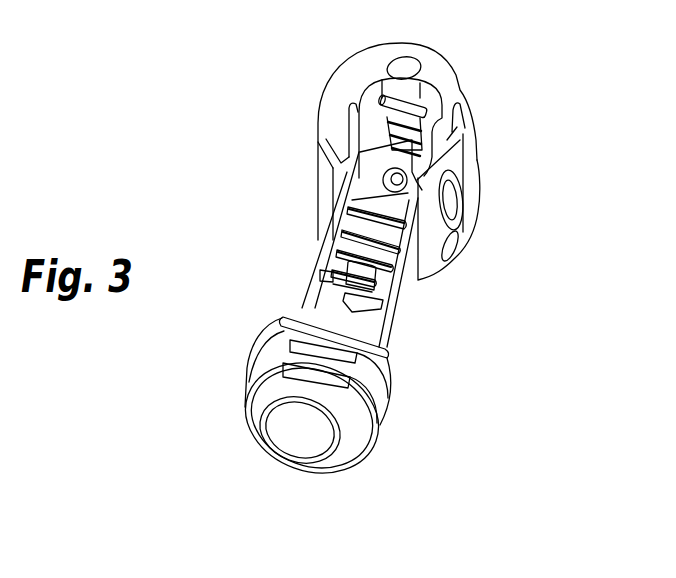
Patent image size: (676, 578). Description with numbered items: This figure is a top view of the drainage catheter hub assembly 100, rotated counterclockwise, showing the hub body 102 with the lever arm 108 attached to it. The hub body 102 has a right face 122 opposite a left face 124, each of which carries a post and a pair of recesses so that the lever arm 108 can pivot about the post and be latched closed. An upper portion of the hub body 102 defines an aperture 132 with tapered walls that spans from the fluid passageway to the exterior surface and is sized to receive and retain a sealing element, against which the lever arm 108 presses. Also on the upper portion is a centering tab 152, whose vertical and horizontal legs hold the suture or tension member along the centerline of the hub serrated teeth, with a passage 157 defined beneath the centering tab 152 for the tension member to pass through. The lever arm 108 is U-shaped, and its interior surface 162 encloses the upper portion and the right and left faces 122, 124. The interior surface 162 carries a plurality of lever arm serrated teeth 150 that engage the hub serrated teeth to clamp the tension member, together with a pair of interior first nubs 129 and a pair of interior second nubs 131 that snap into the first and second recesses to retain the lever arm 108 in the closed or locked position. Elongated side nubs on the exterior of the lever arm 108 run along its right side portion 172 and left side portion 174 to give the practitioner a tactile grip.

The drainage catheter hub assembly 100 is at (192, 109).
The hub body 102 is at (310, 293).
The lever arm 108 is at (468, 183).
The right face 122 is at (392, 338).
The left face 124 is at (305, 313).
The interior first nub 129 is at (350, 108).
The interior second nub 131 is at (320, 147).
The aperture 132 is at (383, 182).
The lever arm serrated teeth 150 is at (457, 127).
The centering tab 152 is at (358, 270).
The passage 157 is at (396, 310).
The interior surface 162 is at (352, 141).
The right side portion 172 is at (466, 203).
The left side portion 174 is at (360, 96).